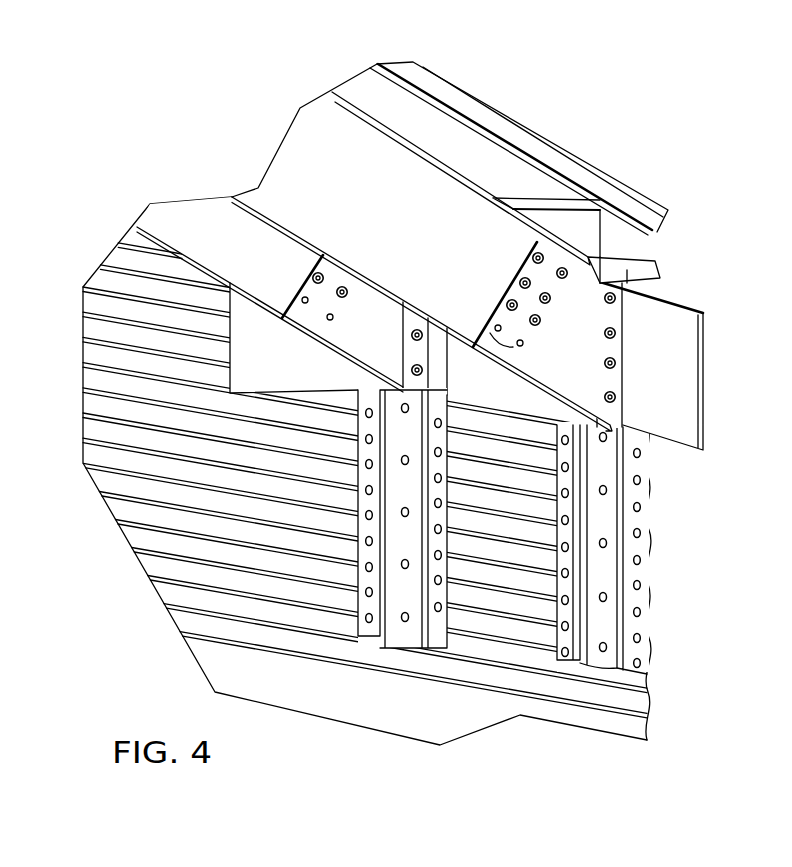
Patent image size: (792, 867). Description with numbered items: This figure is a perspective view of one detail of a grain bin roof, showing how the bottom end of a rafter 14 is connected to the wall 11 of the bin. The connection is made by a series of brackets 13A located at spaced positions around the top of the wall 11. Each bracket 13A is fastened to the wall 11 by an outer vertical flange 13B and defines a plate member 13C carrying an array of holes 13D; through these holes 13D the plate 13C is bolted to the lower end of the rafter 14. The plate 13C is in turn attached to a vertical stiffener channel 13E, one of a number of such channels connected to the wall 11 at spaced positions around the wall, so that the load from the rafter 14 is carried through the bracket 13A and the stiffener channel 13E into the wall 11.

The wall 11 is at (650, 517).
The rafter 14 is at (293, 166).
The bracket 13A is at (608, 262).
The outer vertical flange 13B is at (621, 308).
The plate member 13C is at (490, 309).
The array of holes 13D is at (492, 302).
The vertical stiffener channel 13E is at (607, 577).